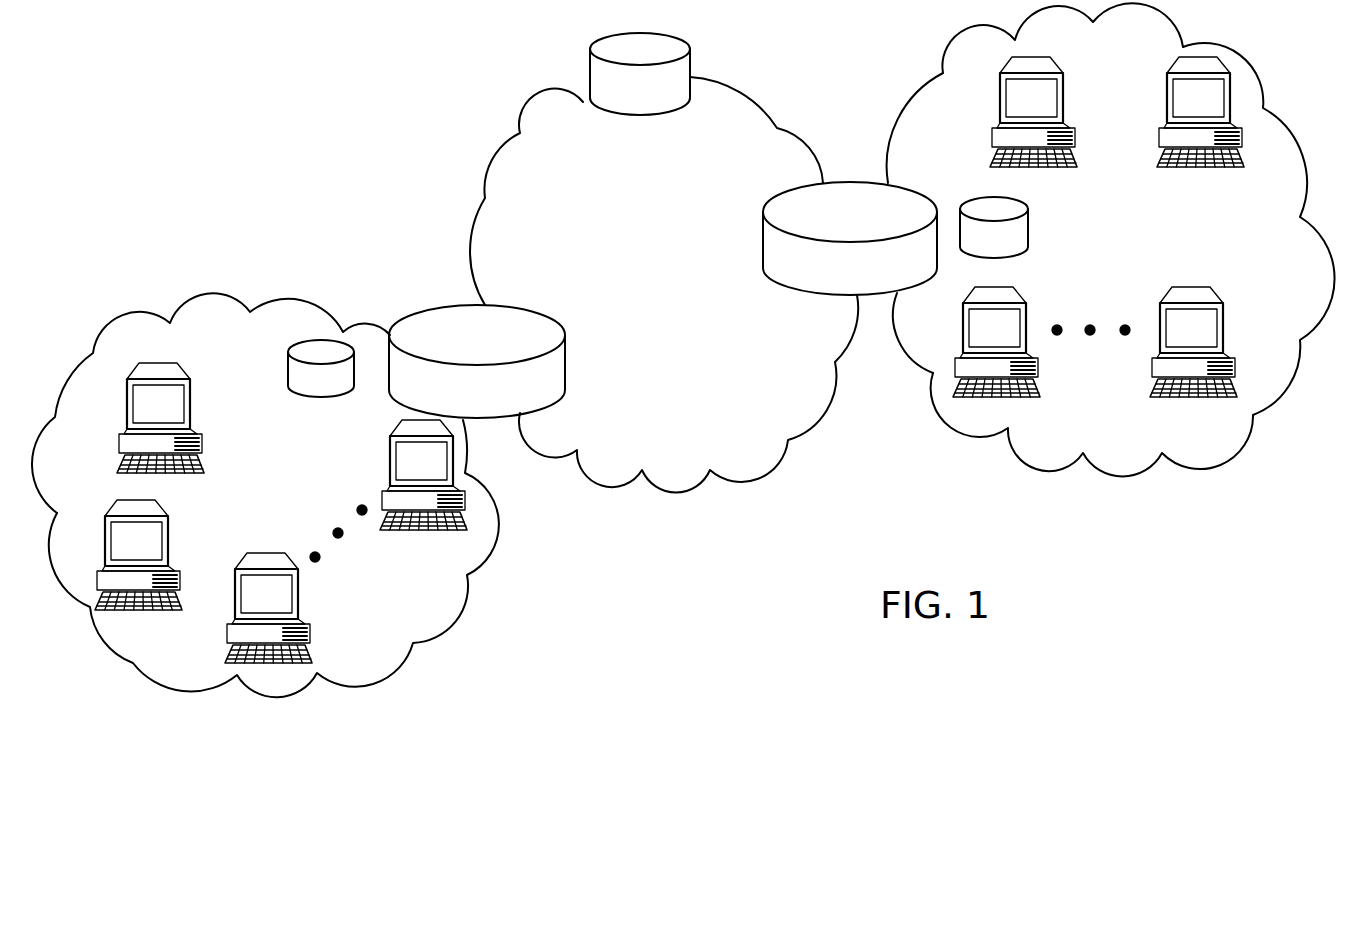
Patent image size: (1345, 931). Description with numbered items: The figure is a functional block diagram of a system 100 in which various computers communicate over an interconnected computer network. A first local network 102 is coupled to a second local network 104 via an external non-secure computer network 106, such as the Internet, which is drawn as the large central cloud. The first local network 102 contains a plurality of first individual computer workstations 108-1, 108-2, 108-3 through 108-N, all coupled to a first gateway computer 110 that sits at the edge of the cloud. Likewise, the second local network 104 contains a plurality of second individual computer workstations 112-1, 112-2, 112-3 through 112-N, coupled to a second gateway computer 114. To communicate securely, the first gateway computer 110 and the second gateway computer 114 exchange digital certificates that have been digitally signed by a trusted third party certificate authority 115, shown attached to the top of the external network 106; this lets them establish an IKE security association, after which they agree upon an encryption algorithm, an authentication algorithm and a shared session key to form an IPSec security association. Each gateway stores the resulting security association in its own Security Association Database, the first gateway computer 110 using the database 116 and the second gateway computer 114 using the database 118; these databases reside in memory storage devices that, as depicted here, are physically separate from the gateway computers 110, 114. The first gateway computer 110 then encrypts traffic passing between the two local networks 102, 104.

The system 100 is at (375, 128).
The first local network 102 is at (100, 480).
The second local network 104 is at (1130, 436).
The external non-secure computer network 106 is at (668, 302).
The first individual computer workstation 108-1 is at (170, 390).
The first individual computer workstation 108-2 is at (133, 530).
The first individual computer workstation 108-3 is at (268, 587).
The first individual computer workstation 108-N is at (412, 460).
The first gateway computer 110 is at (445, 332).
The second individual computer workstation 112-1 is at (1097, 72).
The second individual computer workstation 112-2 is at (1200, 97).
The second individual computer workstation 112-3 is at (1195, 320).
The second individual computer workstation 112-N is at (997, 325).
The second gateway computer 114 is at (843, 208).
The trusted third party certificate authority 115 is at (652, 45).
The Security Association Database 116 is at (312, 352).
The Security Association Database 118 is at (1000, 210).